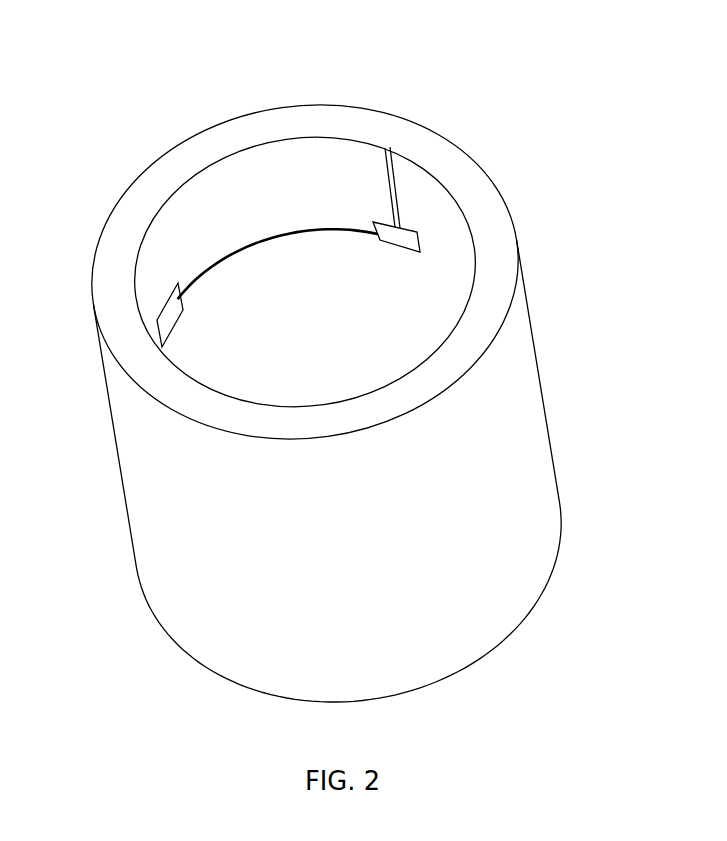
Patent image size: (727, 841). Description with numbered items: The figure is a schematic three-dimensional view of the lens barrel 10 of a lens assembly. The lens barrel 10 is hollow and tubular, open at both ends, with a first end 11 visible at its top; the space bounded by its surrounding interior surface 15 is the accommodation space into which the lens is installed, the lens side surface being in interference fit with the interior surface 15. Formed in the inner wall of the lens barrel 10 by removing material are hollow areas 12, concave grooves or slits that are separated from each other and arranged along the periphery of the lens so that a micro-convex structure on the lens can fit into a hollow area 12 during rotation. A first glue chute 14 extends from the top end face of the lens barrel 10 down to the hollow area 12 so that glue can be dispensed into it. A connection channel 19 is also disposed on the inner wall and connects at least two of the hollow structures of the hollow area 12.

The lens barrel 10 is at (497, 433).
The first end 11 is at (305, 252).
The hollow area 12 is at (110, 370).
The first glue chute 14 is at (397, 190).
The interior surface 15 is at (242, 202).
The connection channel 19 is at (327, 222).